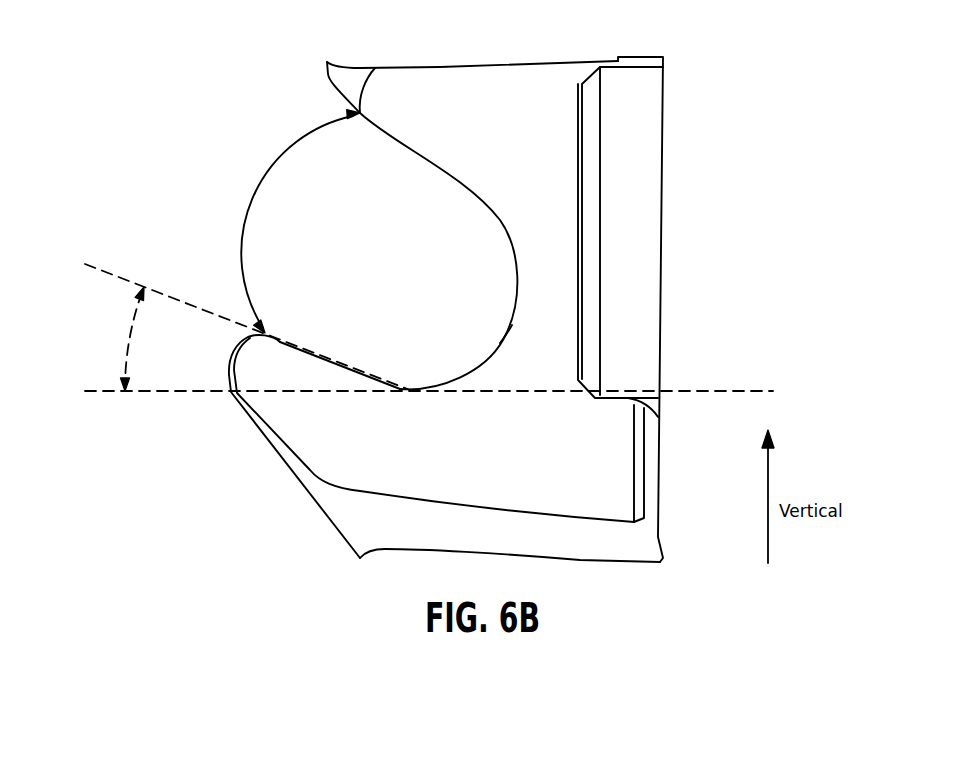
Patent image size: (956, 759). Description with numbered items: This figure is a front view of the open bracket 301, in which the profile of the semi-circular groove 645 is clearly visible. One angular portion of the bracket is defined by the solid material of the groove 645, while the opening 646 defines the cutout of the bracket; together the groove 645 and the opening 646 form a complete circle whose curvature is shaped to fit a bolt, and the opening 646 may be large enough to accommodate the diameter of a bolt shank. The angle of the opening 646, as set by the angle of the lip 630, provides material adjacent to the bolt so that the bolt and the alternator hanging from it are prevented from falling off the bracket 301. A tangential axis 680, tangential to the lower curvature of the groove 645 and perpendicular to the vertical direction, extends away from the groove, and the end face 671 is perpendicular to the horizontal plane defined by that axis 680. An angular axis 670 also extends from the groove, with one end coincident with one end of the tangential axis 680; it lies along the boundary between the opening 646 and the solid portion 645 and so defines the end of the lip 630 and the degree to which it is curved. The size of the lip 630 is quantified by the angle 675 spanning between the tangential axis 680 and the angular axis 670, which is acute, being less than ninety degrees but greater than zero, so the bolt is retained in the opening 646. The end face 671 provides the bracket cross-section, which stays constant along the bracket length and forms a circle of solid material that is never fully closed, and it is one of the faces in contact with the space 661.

The bracket 301 is at (143, 55).
The space 661 is at (260, 112).
The end face 671 is at (524, 198).
The semi-circular groove 645 is at (512, 343).
The opening 646 is at (280, 221).
The lip 630 is at (290, 415).
The angular axis 670 is at (229, 322).
The angle 675 is at (116, 339).
The tangential axis 680 is at (434, 392).